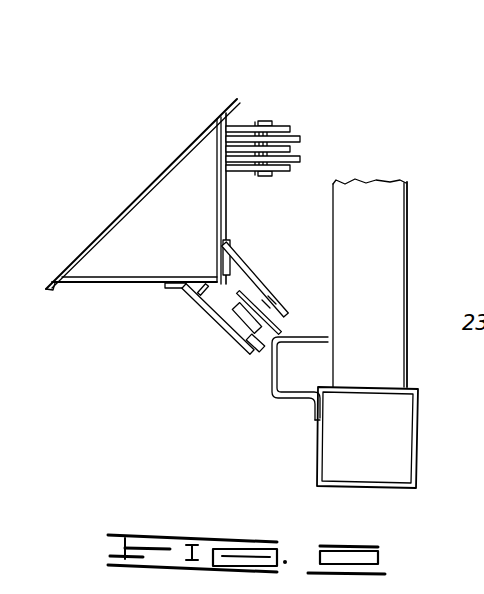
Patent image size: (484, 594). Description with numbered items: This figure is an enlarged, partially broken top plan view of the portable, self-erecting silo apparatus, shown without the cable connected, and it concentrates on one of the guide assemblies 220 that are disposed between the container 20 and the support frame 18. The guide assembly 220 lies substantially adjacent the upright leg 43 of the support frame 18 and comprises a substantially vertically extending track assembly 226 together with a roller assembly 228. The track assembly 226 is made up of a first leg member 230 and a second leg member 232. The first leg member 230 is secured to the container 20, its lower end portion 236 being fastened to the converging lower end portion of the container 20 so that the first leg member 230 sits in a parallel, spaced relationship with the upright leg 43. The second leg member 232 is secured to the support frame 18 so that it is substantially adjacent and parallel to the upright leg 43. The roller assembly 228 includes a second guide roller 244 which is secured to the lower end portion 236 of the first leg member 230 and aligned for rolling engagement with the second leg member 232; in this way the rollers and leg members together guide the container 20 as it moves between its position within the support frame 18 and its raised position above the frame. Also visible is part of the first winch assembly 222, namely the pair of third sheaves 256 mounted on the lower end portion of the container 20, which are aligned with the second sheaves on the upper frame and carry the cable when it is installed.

The support frame 18 is at (409, 231).
The container 20 is at (177, 165).
The upright leg 43 is at (396, 452).
The guide assembly 220 is at (243, 352).
The first winch assembly 222 is at (330, 132).
The track assembly 226 is at (261, 380).
The roller assembly 228 is at (220, 325).
The first leg member 230 is at (102, 281).
The second leg member 232 is at (292, 404).
The lower end portion 236 is at (222, 165).
The second guide roller 244 is at (264, 291).
The third sheaves 256 is at (273, 123).